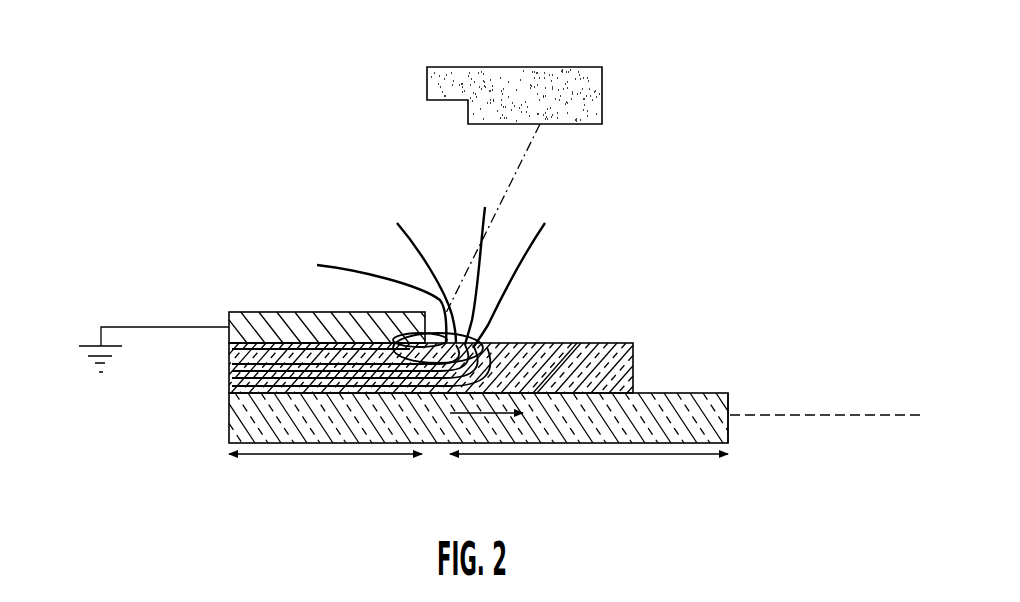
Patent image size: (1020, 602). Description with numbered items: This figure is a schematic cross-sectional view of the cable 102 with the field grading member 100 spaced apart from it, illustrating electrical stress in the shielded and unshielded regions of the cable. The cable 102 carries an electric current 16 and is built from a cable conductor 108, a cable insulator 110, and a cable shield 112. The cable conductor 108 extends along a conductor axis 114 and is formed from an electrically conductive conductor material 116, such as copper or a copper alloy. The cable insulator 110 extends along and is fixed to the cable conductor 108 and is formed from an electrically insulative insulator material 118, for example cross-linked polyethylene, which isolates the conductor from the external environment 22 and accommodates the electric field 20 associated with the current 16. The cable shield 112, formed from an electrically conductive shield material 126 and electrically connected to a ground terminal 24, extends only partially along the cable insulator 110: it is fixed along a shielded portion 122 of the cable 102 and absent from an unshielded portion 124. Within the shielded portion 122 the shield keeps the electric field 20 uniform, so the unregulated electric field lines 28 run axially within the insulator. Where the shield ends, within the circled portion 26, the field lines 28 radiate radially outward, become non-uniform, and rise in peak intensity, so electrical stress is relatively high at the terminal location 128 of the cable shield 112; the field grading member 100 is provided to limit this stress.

The electric current 16 is at (462, 414).
The electric field 20 is at (552, 258).
The external environment 22 is at (762, 135).
The ground terminal 24 is at (90, 343).
The circled portion 26 is at (487, 347).
The unregulated electric field lines 28 is at (340, 262).
The field grading member 100 is at (577, 73).
The cable 102 is at (268, 468).
The cable conductor 108 is at (728, 442).
The cable insulator 110 is at (633, 367).
The cable shield 112 is at (245, 312).
The conductor axis 114 is at (843, 417).
The conductor material 116 is at (682, 420).
The insulator material 118 is at (585, 357).
The shielded portion 122 is at (340, 455).
The unshielded portion 124 is at (597, 455).
The shield material 126 is at (298, 318).
The terminal location 128 is at (437, 333).